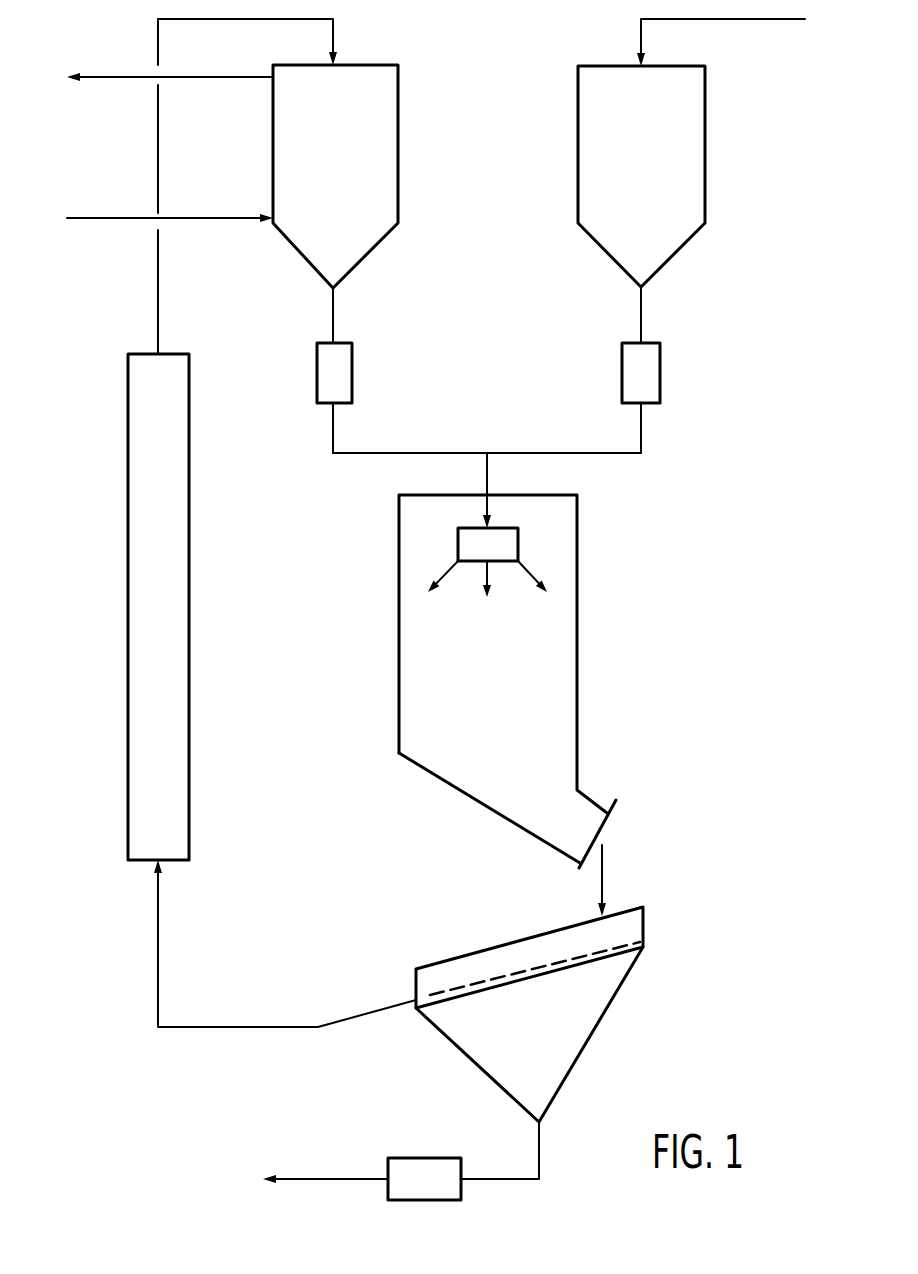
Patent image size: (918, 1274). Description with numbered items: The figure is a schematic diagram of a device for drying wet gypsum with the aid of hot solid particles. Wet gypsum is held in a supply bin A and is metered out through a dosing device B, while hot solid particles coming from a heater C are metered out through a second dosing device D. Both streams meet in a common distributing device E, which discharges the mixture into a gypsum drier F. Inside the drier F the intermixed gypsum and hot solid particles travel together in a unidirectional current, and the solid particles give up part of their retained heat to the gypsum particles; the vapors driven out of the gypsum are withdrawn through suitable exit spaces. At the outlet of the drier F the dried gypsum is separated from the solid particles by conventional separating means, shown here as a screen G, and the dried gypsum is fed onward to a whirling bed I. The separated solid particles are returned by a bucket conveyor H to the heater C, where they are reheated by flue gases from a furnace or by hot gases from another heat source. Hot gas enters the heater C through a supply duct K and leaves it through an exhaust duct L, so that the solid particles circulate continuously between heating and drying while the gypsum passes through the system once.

The supply bin A is at (691, 153).
The dosing device B is at (641, 370).
The heater C is at (278, 153).
The dosing device D is at (334, 370).
The common distributing device E is at (487, 556).
The gypsum drier F is at (507, 681).
The screen / separator G is at (529, 1014).
The bucket conveyor H is at (158, 607).
The whirling bed I is at (401, 1161).
The supply duct for hot gas K is at (170, 234).
The exhaust duct L is at (170, 94).